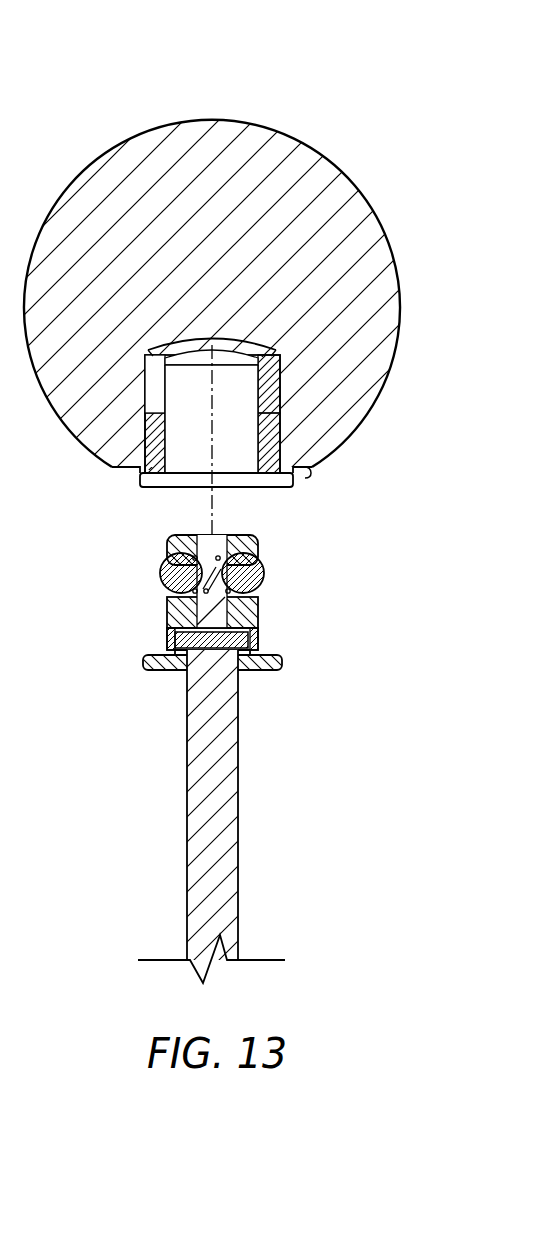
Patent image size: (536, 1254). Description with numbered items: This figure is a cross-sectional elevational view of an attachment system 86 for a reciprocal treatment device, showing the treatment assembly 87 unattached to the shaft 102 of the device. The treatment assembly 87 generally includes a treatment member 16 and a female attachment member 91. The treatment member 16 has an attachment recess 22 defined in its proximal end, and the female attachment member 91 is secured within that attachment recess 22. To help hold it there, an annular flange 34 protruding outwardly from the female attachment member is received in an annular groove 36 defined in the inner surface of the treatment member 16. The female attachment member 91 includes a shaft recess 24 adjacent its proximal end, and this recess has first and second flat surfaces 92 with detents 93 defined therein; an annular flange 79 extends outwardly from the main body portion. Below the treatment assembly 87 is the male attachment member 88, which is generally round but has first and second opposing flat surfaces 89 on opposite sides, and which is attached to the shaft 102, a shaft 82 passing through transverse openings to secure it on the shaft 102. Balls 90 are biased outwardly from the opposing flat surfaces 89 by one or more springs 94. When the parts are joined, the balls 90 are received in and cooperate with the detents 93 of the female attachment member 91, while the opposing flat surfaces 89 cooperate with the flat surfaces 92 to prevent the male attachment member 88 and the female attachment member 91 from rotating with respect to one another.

The attachment system 86 is at (78, 128).
The treatment member 16 is at (296, 158).
The annular flange 34 is at (275, 345).
The annular groove 36 is at (270, 352).
The detents 93 is at (270, 383).
The first and second flat surfaces 92 is at (268, 385).
The female attachment member 91 is at (268, 433).
The attachment recess 22 is at (270, 391).
The annular flange 79 is at (313, 472).
The shaft recess 24 is at (250, 468).
The treatment assembly 87 is at (92, 490).
The springs 94 is at (213, 563).
The balls 90 is at (158, 573).
The first and second opposing flat surfaces 89 is at (167, 612).
The male attachment member 88 is at (173, 622).
The shaft 82 is at (250, 640).
The shaft 102 is at (228, 815).